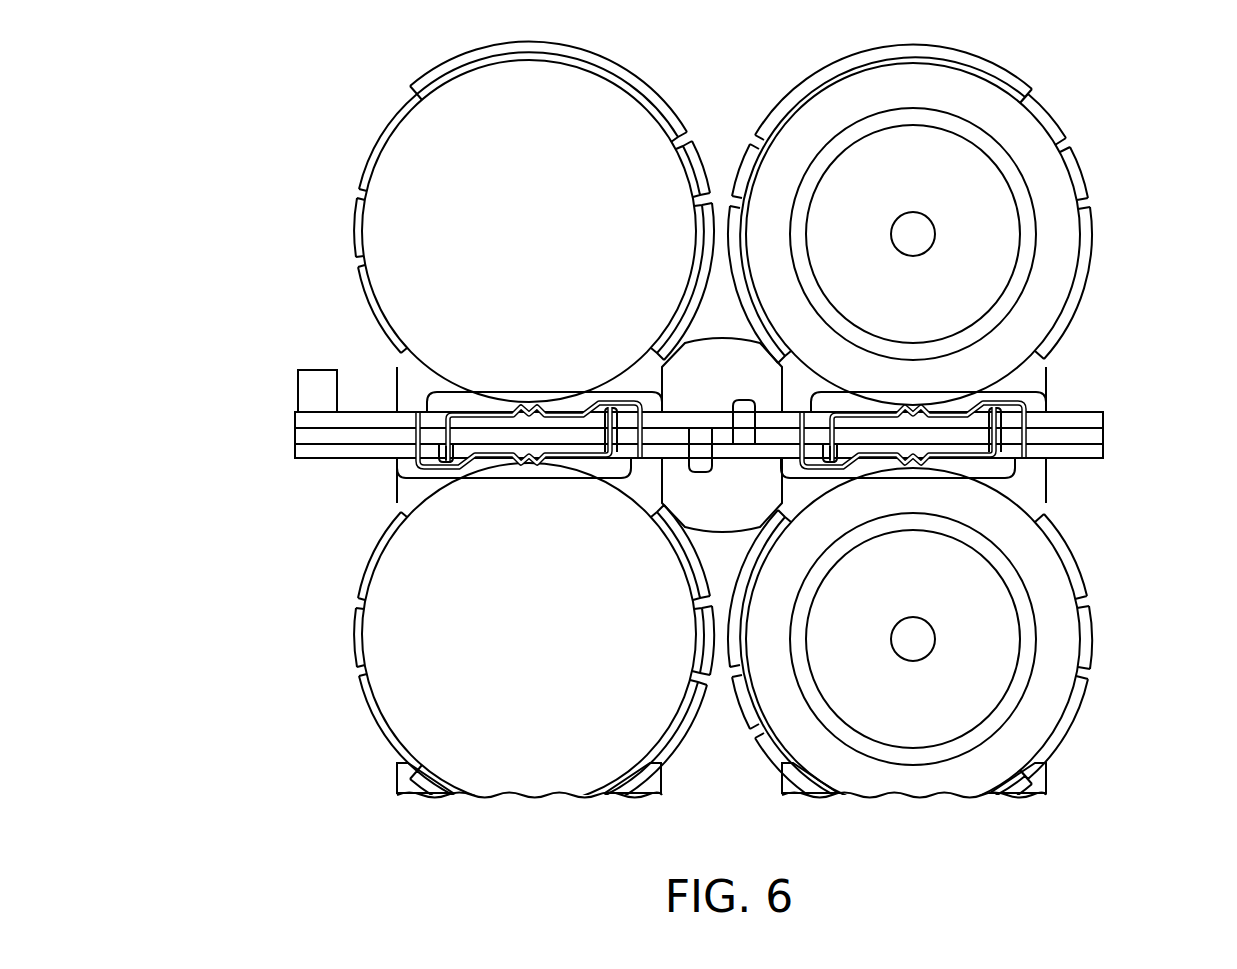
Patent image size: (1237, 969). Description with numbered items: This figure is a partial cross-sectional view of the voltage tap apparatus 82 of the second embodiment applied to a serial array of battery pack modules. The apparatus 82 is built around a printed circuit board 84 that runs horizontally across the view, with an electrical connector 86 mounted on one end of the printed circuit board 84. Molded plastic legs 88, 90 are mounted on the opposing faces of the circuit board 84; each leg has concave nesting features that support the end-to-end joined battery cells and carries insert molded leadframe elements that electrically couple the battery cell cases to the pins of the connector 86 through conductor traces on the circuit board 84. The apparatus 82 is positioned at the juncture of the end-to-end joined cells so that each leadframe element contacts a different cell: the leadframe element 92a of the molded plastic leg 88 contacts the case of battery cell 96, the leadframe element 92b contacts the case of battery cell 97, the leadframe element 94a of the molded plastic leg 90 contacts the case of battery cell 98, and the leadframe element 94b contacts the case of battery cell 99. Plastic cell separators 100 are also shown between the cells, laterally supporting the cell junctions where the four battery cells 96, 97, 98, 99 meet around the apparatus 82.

The voltage tap apparatus 82 is at (262, 430).
The printed circuit board 84 is at (1095, 440).
The electrical connector 86 is at (298, 394).
The molded plastic leg 88 is at (1070, 392).
The molded plastic leg 90 is at (1078, 484).
The leadframe element 92a is at (975, 408).
The leadframe element 92b is at (450, 412).
The leadframe element 94a is at (956, 478).
The leadframe element 94b is at (420, 466).
The battery cell 96 is at (1063, 143).
The battery cell 97 is at (370, 160).
The battery cell 98 is at (1090, 612).
The battery cell 99 is at (357, 668).
The plastic cell separator 100 is at (762, 120).